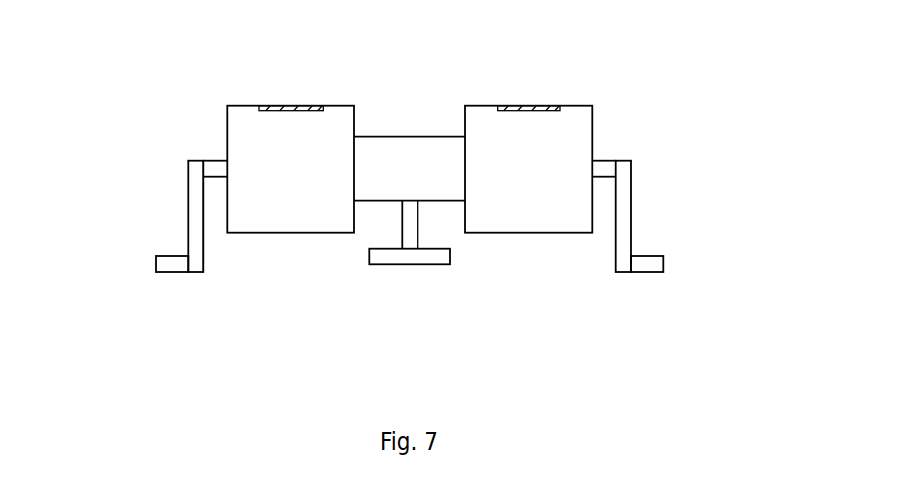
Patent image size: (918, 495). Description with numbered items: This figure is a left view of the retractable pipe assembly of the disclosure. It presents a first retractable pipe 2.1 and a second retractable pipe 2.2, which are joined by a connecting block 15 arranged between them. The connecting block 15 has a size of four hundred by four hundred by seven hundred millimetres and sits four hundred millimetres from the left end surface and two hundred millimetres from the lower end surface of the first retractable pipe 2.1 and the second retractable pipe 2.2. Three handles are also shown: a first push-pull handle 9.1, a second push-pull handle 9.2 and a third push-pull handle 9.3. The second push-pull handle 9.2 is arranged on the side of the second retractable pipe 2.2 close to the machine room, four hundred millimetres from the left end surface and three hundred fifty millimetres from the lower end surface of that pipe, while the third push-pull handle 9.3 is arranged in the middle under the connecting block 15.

The first retractable pipe 2.1 is at (592, 105).
The second retractable pipe 2.2 is at (227, 105).
The connecting block 15 is at (410, 137).
The first push-pull handle 9.1 is at (633, 227).
The second push-pull handle 9.2 is at (187, 227).
The third push-pull handle 9.3 is at (410, 265).